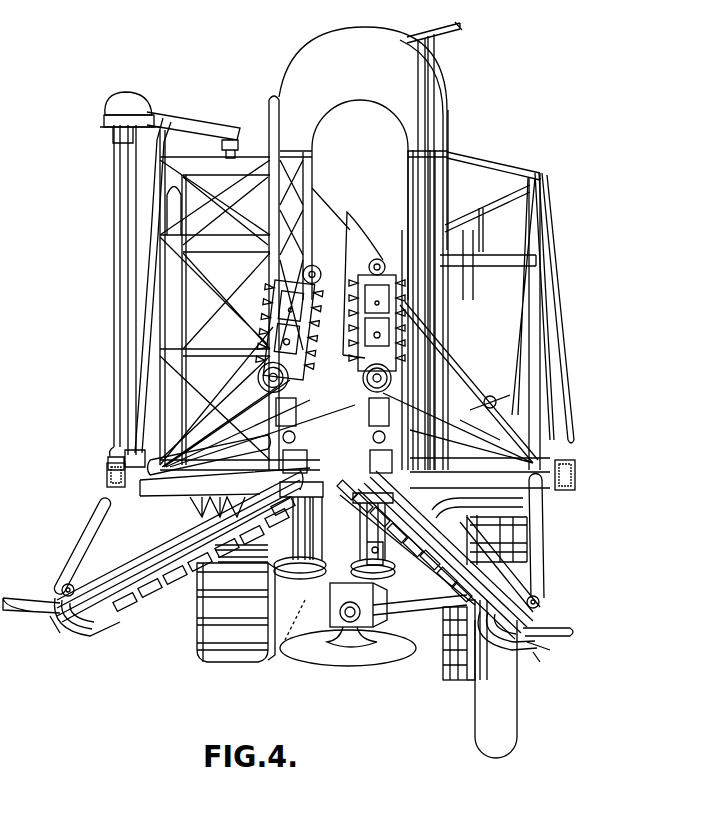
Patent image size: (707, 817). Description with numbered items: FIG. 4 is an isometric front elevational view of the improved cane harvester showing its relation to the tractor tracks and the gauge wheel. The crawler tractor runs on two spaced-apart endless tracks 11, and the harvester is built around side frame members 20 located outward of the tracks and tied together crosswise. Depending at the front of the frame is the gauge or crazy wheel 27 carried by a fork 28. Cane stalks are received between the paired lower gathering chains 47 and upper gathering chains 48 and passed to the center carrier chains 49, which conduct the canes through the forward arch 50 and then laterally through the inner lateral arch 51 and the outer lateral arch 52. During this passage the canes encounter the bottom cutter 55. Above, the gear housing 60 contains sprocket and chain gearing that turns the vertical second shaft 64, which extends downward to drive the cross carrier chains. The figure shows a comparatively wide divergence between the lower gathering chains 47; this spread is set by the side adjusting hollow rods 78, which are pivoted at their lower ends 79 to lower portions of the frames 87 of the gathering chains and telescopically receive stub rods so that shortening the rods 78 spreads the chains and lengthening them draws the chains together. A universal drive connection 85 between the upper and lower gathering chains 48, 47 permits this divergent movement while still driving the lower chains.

The forward arch 50 is at (327, 50).
The inner lateral arch 51 is at (274, 86).
The gear housing 60 is at (143, 90).
The outer lateral arch 52 is at (173, 134).
The second shaft 64 is at (120, 238).
The upper gathering chains 48 is at (362, 367).
The universal drive connection 85 is at (377, 433).
The center carrier chains 49 is at (307, 462).
The side frame members 20 is at (108, 478).
The side adjusting hollow rods 78 is at (95, 543).
The lower ends of hollow rods 79 is at (62, 590).
The lower gathering chains 47 is at (133, 603).
The frames of the gathering chains 87 is at (96, 614).
The endless tracks 11 is at (245, 653).
The fork 28 is at (463, 633).
The bottom cutter 55 is at (338, 660).
The gauge wheel 27 is at (488, 743).